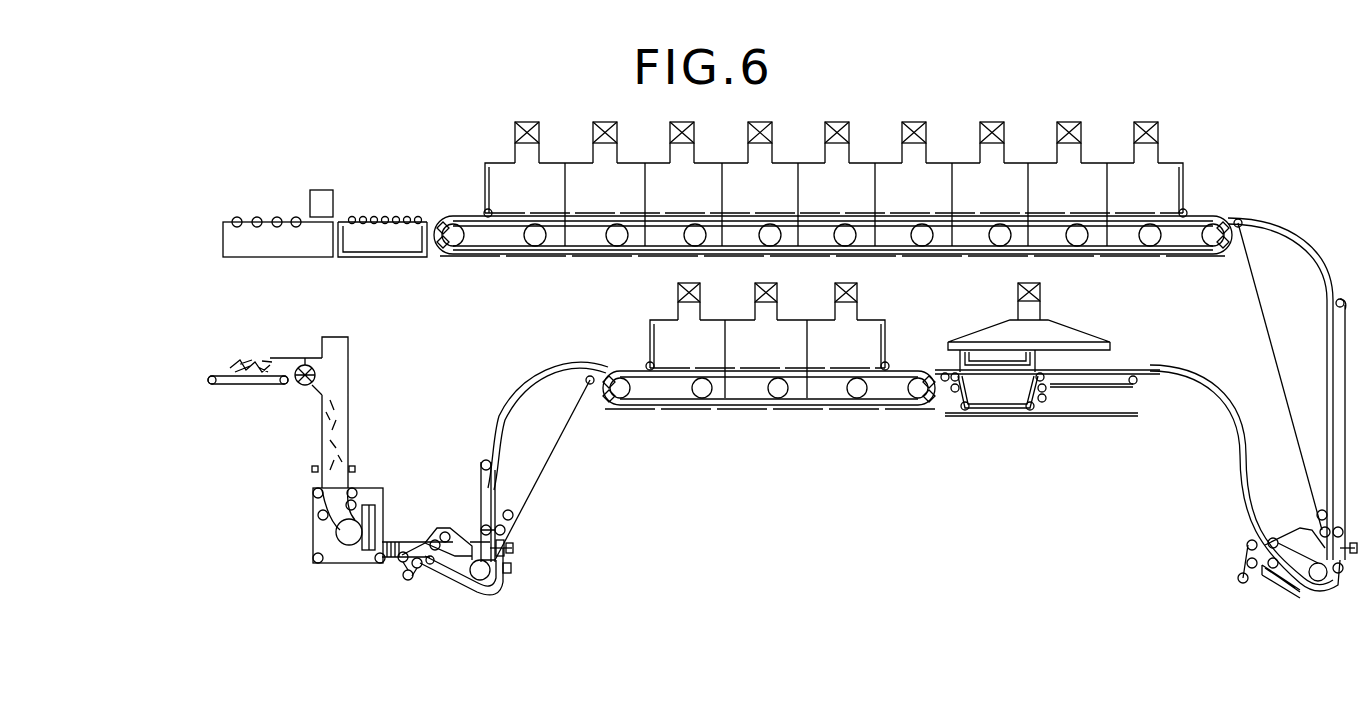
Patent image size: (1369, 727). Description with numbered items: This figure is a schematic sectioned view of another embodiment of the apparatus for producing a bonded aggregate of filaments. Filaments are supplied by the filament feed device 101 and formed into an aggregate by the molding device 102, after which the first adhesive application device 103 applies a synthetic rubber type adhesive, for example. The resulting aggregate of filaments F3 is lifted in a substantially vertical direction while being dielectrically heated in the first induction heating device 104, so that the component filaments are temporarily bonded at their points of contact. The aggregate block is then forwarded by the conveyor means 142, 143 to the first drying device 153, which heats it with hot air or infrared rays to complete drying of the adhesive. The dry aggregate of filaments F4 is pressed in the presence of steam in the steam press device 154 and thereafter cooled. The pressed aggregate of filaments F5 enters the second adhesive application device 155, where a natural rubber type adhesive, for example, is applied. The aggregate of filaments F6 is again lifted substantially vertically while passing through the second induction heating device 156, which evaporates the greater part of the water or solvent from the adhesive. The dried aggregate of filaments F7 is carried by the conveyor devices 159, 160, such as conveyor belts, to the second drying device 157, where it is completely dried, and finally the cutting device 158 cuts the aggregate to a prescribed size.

The filament feed device 101 is at (286, 355).
The molding device 102 is at (392, 525).
The first adhesive application device 103 is at (452, 525).
The first induction heating device 104 is at (587, 539).
The conveyor means 142 is at (485, 458).
The conveyor means 143 is at (497, 495).
The first drying device 153 is at (750, 416).
The steam press device 154 is at (1045, 422).
The second adhesive application device 155 is at (1277, 588).
The second induction heating device 156 is at (1338, 552).
The second drying device 157 is at (1022, 135).
The cutting device 158 is at (287, 200).
The conveyor device 159 is at (1277, 368).
The conveyor device 160 is at (1345, 378).
The aggregate of filaments F3 is at (470, 585).
The dry aggregate of filaments F4 is at (936, 372).
The pressed aggregate of filaments F5 is at (1240, 437).
The aggregate of filaments F6 is at (1302, 592).
The aggregate of filaments F7 is at (1333, 419).